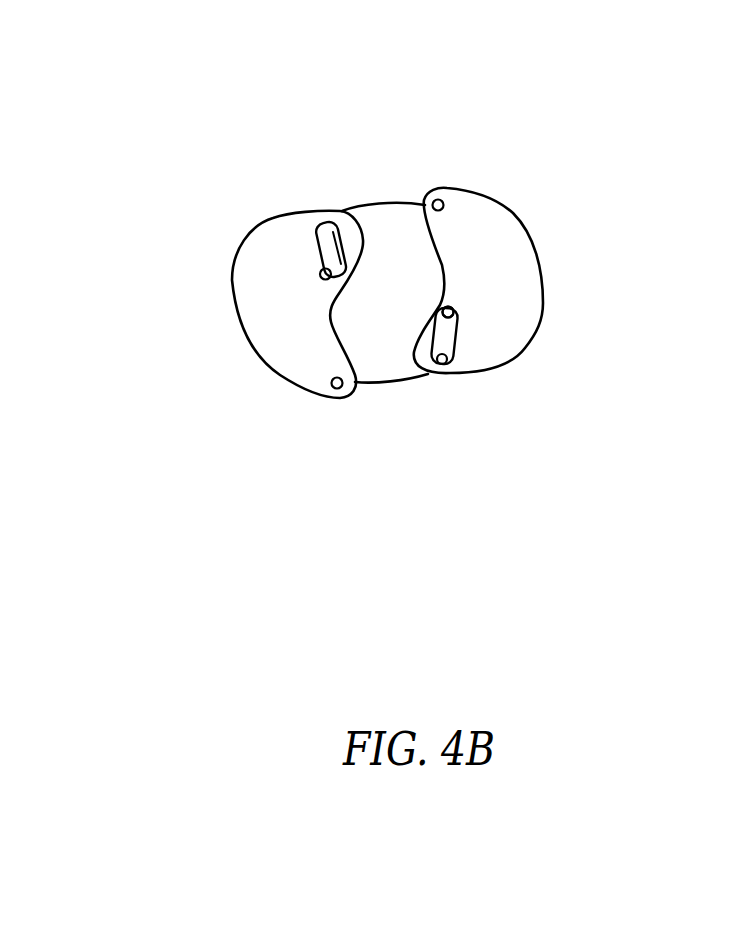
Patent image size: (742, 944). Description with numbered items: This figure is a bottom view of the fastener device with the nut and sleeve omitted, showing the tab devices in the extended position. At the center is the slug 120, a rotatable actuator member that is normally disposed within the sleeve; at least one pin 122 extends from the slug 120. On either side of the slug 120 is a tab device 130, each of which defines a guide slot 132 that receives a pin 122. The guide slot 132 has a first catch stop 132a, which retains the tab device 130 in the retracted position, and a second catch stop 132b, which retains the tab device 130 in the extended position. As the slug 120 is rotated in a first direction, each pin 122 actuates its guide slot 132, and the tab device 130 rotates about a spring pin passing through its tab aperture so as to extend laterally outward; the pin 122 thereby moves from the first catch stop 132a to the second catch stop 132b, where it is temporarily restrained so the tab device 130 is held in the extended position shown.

The slug 120 is at (383, 353).
The tab device 130 is at (292, 330).
The guide slot 132 is at (321, 252).
The first catch stop 132a is at (446, 362).
The second catch stop 132b is at (448, 307).
The pin 122 is at (320, 278).